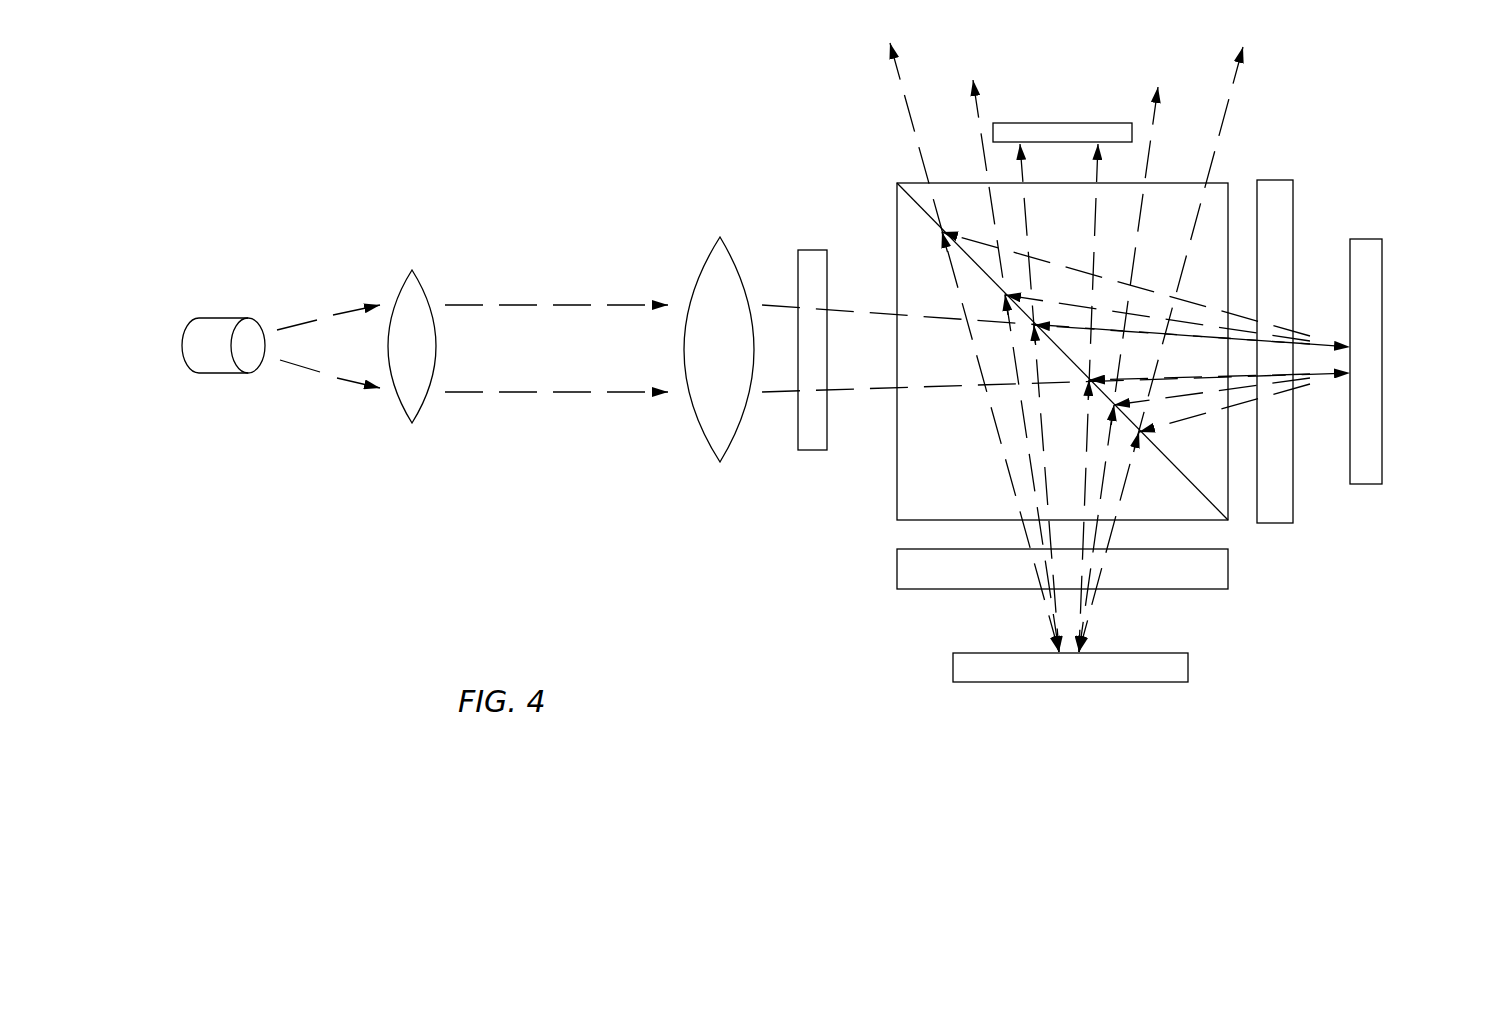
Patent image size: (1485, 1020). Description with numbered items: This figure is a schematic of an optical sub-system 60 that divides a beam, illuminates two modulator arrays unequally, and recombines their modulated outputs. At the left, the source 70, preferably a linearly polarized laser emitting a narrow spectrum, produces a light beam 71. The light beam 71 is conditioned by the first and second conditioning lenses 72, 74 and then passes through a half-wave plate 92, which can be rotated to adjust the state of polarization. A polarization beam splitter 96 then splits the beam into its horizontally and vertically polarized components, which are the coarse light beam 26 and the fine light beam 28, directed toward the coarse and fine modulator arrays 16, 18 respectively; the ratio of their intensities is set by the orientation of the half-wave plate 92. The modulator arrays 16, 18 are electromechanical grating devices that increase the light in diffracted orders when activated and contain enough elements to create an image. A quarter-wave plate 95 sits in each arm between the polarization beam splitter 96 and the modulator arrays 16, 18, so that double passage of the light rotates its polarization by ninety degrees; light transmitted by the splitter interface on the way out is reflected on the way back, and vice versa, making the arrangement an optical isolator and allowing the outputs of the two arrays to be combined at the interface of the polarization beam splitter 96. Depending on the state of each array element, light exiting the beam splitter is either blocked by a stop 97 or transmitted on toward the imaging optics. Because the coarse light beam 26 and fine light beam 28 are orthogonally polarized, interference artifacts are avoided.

The optical sub-system 60 is at (657, 83).
The source 70 is at (217, 318).
The light beam 71 is at (327, 318).
The first conditioning lens 72 is at (415, 273).
The second conditioning lens 74 is at (698, 270).
The half-wave plate 92 is at (798, 433).
The polarization beam splitter 96 is at (897, 510).
The fine light beam 28 is at (998, 425).
The coarse light beam 26 is at (1303, 388).
The stop 97 is at (1050, 125).
The quarter-wave plate 95 is at (1280, 180).
The coarse modulator array 16 is at (1382, 317).
The fine modulator array 18 is at (953, 675).